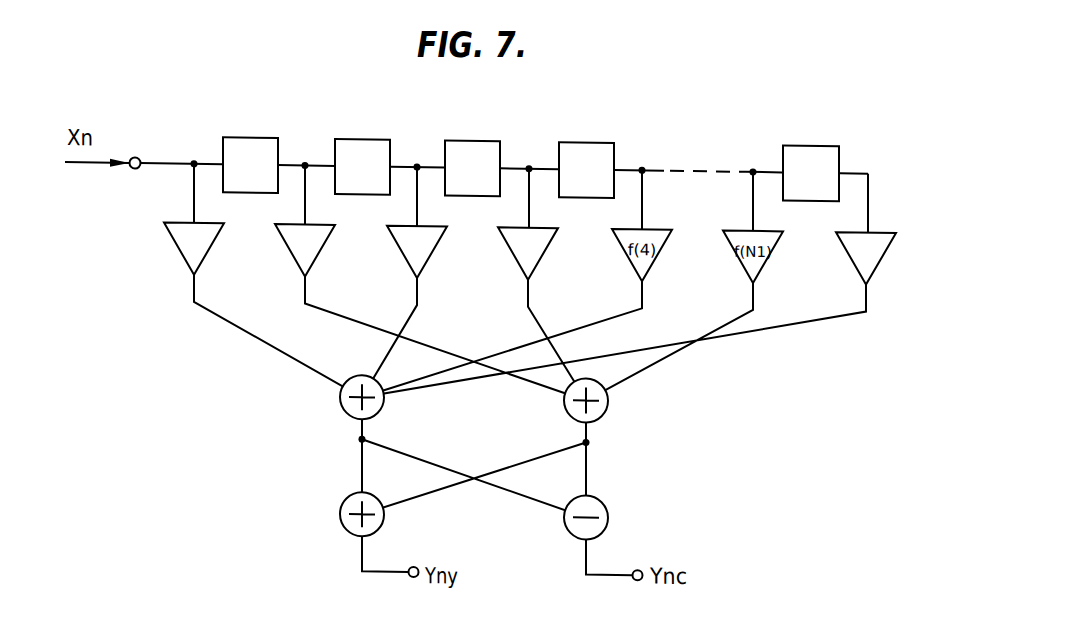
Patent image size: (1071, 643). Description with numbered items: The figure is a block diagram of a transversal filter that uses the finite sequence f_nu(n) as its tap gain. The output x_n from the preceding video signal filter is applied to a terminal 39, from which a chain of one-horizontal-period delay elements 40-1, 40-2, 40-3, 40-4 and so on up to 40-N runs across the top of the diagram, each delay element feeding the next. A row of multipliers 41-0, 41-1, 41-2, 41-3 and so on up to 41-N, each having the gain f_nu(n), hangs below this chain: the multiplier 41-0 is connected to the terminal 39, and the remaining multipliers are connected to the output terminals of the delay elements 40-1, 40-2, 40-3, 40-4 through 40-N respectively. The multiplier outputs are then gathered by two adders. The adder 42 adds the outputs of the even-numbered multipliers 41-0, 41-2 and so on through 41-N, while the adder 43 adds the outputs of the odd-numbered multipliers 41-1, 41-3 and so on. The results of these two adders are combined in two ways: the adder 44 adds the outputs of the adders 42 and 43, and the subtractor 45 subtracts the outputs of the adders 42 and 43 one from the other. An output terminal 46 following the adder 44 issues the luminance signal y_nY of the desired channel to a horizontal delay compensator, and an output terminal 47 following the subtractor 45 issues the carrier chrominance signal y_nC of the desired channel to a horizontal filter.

The terminal 39 is at (138, 157).
The 1H delay element 40-1 is at (252, 100).
The 1H delay element 40-2 is at (367, 136).
The 1H delay element 40-3 is at (471, 136).
The 1H delay element 40-4 is at (568, 136).
The 1H delay element 40-N is at (798, 136).
The multiplier 41-0 is at (214, 243).
The multiplier 41-1 is at (325, 243).
The multiplier 41-2 is at (430, 247).
The multiplier 41-3 is at (547, 243).
The multiplier 41-N is at (877, 260).
The adder 42 is at (344, 407).
The adder 43 is at (565, 402).
The adder 44 is at (346, 496).
The subtractor 45 is at (601, 500).
The output terminal 46 is at (409, 564).
The output terminal 47 is at (634, 572).